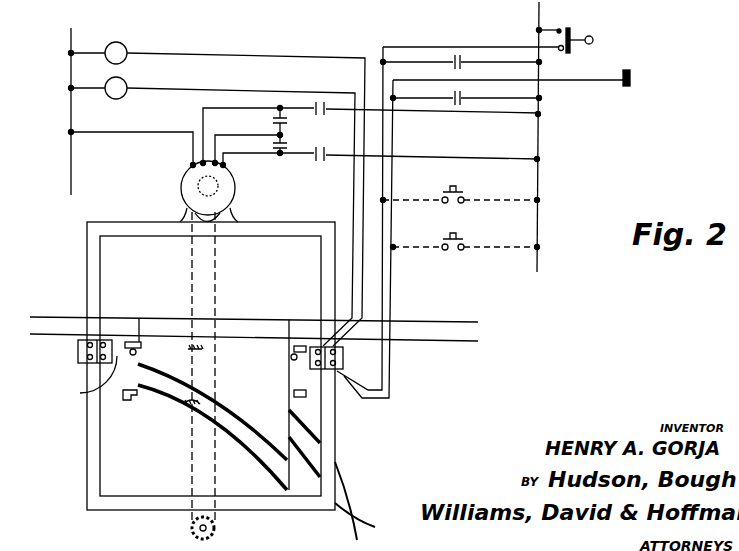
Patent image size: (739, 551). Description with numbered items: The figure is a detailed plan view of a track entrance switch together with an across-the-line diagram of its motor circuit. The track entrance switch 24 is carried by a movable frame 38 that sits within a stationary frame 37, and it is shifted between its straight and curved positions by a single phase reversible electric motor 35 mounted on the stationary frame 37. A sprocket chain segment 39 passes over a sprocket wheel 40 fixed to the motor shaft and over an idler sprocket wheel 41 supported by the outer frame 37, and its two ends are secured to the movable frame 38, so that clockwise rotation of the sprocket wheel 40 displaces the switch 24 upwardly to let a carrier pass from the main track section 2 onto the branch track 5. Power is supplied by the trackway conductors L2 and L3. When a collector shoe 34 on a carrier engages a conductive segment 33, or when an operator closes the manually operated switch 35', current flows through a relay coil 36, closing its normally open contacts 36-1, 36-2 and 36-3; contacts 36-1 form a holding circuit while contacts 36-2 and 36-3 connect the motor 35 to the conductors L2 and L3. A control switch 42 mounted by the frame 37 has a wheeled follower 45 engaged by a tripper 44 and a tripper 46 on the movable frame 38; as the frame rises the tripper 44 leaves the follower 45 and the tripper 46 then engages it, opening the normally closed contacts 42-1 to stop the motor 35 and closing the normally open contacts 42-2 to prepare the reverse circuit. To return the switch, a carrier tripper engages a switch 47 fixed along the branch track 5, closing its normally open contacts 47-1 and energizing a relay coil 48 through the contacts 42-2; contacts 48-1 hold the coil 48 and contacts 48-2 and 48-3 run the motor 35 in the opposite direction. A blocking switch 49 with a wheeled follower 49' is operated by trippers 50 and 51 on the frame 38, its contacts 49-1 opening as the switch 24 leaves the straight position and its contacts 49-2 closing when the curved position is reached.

The main track section 2 is at (418, 328).
The branch track 5 is at (368, 507).
The track entrance switch 24 is at (268, 297).
The conductive segment 33 is at (622, 88).
The collector shoe 34 is at (632, 72).
The electric motor 35 is at (175, 165).
The manually operated switch 35' is at (459, 218).
The relay coil 36 is at (124, 81).
The relay contacts 36-1 is at (456, 105).
The relay contacts 36-2 is at (274, 147).
The relay contacts 36-3 is at (331, 90).
The stationary frame 37 is at (328, 479).
The movable frame 38 is at (280, 428).
The sprocket chain segment 39 is at (215, 275).
The sprocket wheel 40 is at (200, 189).
The idler sprocket wheel 41 is at (190, 530).
The control switch 42 is at (354, 360).
The normally closed contacts 42-1 is at (318, 346).
The normally open contacts 42-2 is at (340, 368).
The tripper 44 is at (292, 348).
The wheeled follower 45 is at (291, 359).
The tripper 46 is at (292, 394).
The switch 47 is at (572, 50).
The normally open contacts 47-1 is at (552, 30).
The relay coil 48 is at (124, 46).
The relay contacts 48-1 is at (456, 69).
The relay contacts 48-2 is at (272, 121).
The relay contacts 48-3 is at (332, 137).
The switch 49 is at (70, 351).
The contacts 49-1 is at (80, 394).
The contacts 49-2 is at (80, 364).
The wheeled follower 49' is at (156, 360).
The tripper 50 is at (143, 346).
The tripper 51 is at (128, 401).
The conductor L2 is at (537, 180).
The conductor L3 is at (71, 178).